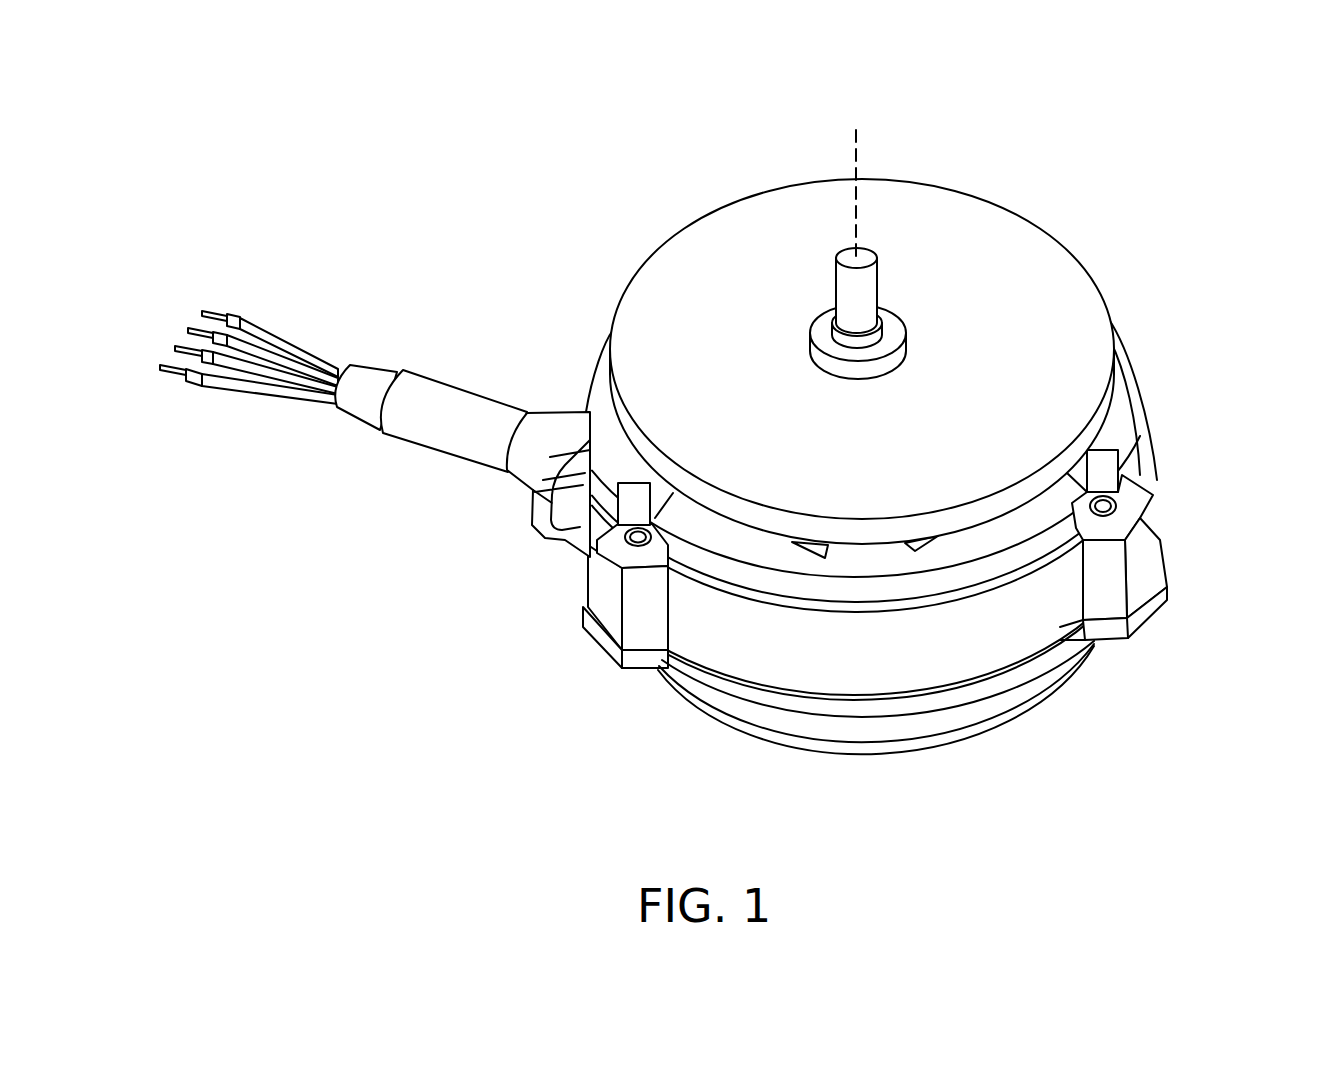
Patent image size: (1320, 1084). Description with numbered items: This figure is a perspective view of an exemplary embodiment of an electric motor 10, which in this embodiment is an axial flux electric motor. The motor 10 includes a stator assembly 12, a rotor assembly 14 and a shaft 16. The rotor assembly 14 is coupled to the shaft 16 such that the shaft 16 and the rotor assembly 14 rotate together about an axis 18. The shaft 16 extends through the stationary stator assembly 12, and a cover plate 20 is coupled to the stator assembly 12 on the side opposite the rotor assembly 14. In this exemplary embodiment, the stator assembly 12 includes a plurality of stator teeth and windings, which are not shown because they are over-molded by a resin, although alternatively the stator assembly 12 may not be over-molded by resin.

The electric motor 10 is at (703, 436).
The stator assembly 12 is at (1037, 577).
The rotor assembly 14 is at (702, 285).
The shaft 16 is at (860, 290).
The axis 18 is at (855, 155).
The cover plate 20 is at (975, 723).